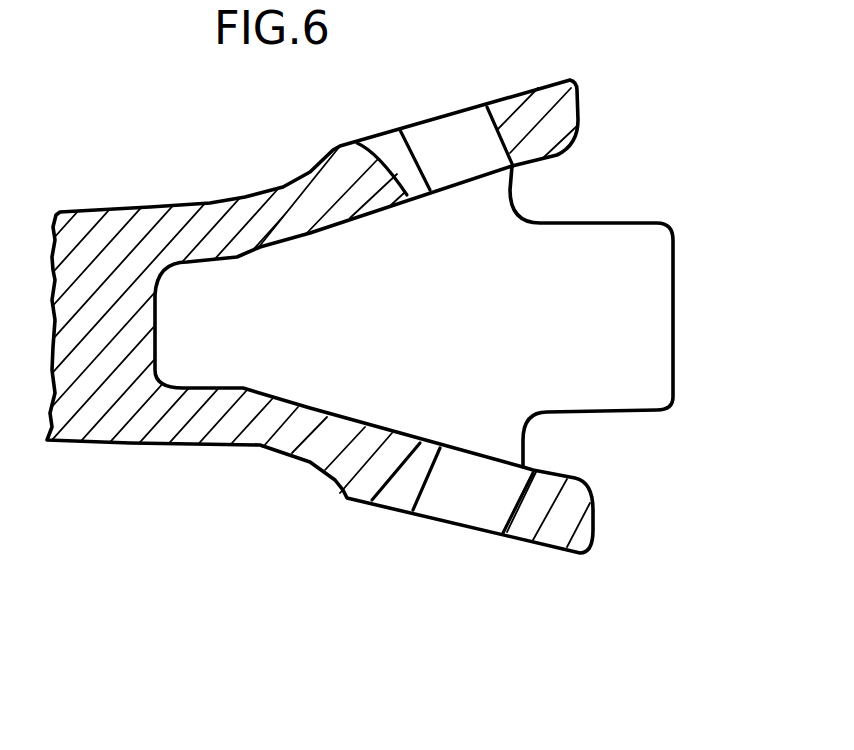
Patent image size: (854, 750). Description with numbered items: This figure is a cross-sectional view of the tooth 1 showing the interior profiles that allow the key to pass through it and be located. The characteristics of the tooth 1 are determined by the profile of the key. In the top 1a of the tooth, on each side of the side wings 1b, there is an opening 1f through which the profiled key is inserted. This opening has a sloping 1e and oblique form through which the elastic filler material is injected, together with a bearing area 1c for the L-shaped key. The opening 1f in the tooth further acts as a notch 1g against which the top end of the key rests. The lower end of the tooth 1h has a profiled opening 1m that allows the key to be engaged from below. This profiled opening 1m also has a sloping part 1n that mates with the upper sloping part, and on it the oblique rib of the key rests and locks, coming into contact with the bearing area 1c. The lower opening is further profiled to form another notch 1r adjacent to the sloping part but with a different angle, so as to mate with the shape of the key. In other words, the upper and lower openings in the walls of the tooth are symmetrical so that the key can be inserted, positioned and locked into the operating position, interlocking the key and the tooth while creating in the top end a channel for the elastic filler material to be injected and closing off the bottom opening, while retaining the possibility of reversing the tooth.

The tooth 1 is at (147, 197).
The top 1a is at (533, 91).
The side wings 1b is at (648, 281).
The bearing area 1c is at (488, 125).
The sloping form 1e is at (378, 158).
The opening 1f is at (463, 160).
The notch 1g is at (407, 205).
The lower end of the tooth 1h is at (383, 507).
The profiled opening 1m is at (467, 467).
The sloping part 1n is at (403, 473).
The notch 1r is at (432, 458).